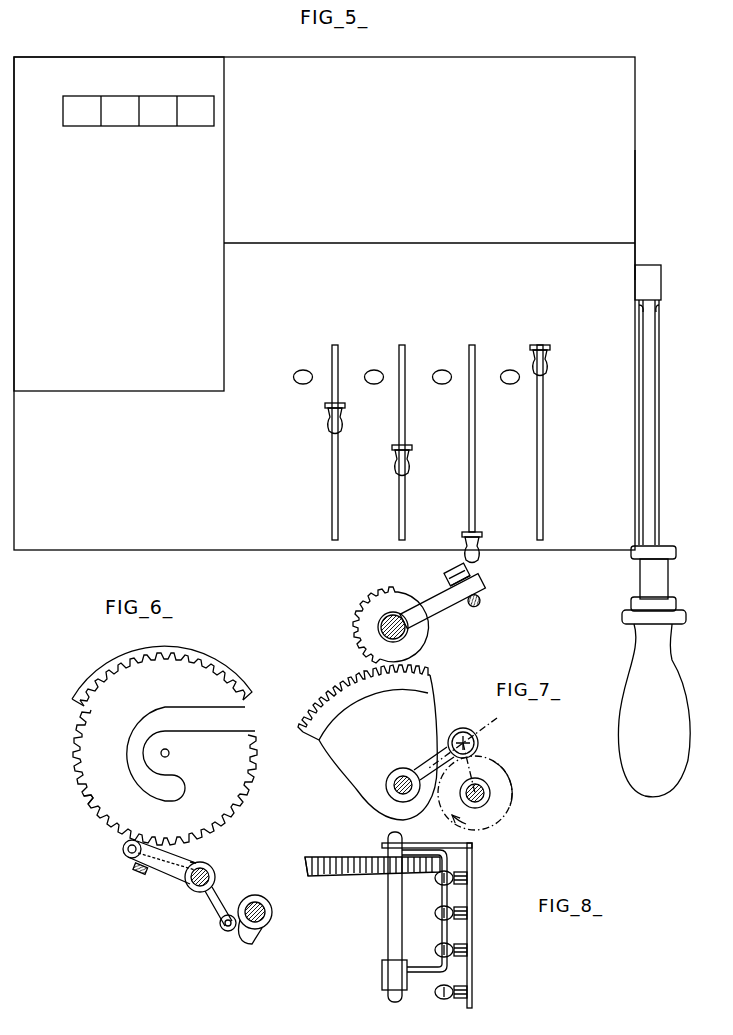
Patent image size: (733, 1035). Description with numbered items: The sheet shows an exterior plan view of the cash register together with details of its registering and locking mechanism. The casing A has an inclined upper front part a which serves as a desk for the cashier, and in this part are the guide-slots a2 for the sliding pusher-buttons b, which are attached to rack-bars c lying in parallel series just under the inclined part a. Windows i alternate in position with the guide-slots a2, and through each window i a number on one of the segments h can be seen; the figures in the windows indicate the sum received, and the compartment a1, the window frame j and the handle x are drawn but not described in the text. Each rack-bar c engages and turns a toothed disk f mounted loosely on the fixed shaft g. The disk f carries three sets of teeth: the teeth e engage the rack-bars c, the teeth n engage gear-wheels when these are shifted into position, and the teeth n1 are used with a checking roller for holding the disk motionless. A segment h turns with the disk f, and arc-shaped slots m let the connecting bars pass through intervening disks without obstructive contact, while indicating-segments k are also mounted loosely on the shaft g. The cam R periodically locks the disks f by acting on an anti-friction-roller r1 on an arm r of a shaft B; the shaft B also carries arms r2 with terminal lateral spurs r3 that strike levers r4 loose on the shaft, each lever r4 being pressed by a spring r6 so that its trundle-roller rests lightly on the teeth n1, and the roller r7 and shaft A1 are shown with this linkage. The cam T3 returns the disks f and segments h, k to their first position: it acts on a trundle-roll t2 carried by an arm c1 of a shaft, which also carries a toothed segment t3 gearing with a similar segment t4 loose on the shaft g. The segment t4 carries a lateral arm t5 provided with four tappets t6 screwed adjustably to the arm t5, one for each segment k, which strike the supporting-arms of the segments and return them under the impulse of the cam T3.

In FIG. 5, the inclined upper front part a is at (324, 303).
In FIG. 5, the compartment of the casing a1 is at (119, 224).
In FIG. 5, the guide-slots a2 is at (544, 452).
In FIG. 5, the casing A is at (643, 215).
In FIG. 5, the indicator window frame j is at (140, 96).
In FIG. 5, the indicating-segments k is at (187, 121).
In FIG. 5, the window i is at (497, 396).
In FIG. 5, the pusher-buttons b is at (545, 363).
In FIG. 5, the operating handle and rod x is at (660, 378).
In FIG. 6, the segments h is at (210, 672).
In FIG. 6, the teeth e is at (102, 672).
In FIG. 6, the toothed disks f is at (162, 688).
In FIG. 6, the arc-shaped slots m is at (191, 754).
In FIG. 6, the fixed shaft or rod g is at (169, 753).
In FIG. 7, the fixed shaft or rod g is at (405, 636).
In FIG. 8, the fixed shaft or rod g is at (395, 920).
In FIG. 6, the teeth n is at (252, 815).
In FIG. 6, the teeth n1 is at (91, 797).
In FIG. 6, the arm r is at (222, 897).
In FIG. 6, the anti-friction-roller r1 is at (225, 931).
In FIG. 6, the arms r2 is at (170, 875).
In FIG. 6, the terminal lateral spurs r3 is at (170, 877).
In FIG. 6, the levers r4 is at (138, 876).
In FIG. 6, the spring r6 is at (193, 862).
In FIG. 6, the pawl roller r7 is at (123, 853).
In FIG. 6, the shaft B is at (192, 889).
In FIG. 6, the cam R is at (250, 940).
In FIG. 6, the cam shaft A1 is at (262, 908).
In FIG. 7, the cam shaft A1 is at (480, 784).
In FIG. 7, the trundle-roll t2 is at (465, 727).
In FIG. 7, the toothed segment t3 is at (367, 742).
In FIG. 8, the toothed segment t3 is at (306, 860).
In FIG. 7, the toothed segment t4 is at (370, 641).
In FIG. 8, the toothed segment t4 is at (364, 857).
In FIG. 7, the lateral arm t5 is at (433, 609).
In FIG. 8, the lateral arm t5 is at (452, 887).
In FIG. 7, the tappets t6 is at (462, 591).
In FIG. 8, the tappets t6 is at (508, 992).
In FIG. 7, the rack-bars c is at (401, 775).
In FIG. 7, the arm c1 is at (444, 756).
In FIG. 7, the cam T3 is at (498, 790).